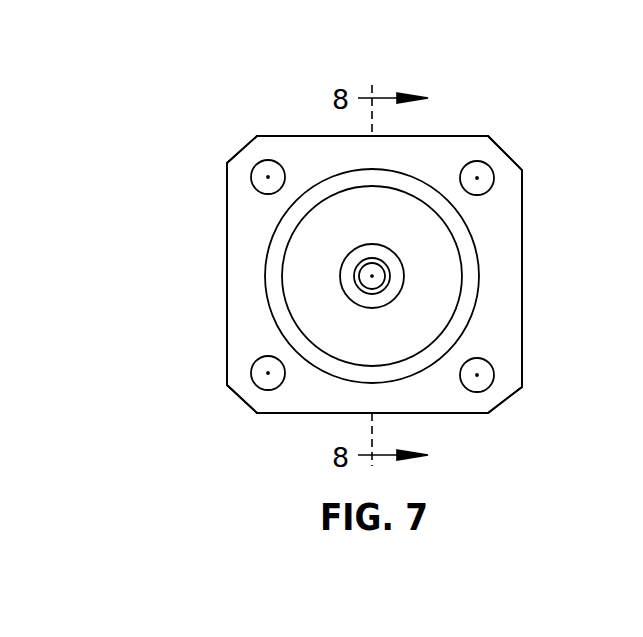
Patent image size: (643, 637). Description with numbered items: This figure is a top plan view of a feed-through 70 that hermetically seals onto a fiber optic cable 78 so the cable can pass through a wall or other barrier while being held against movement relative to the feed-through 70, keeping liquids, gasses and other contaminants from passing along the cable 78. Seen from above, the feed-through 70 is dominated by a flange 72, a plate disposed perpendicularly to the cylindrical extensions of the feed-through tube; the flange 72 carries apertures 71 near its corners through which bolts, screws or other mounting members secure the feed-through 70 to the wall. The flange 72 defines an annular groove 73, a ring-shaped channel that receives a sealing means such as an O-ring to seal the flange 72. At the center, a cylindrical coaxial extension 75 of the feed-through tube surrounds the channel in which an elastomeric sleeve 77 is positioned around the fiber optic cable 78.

The feed-through 70 is at (266, 66).
The apertures 71 is at (251, 375).
The flange 72 is at (227, 271).
The annular groove 73 is at (473, 319).
The extension 75 is at (352, 303).
The elastomeric sleeve 77 is at (385, 267).
The fiber optic cable 78 is at (357, 270).